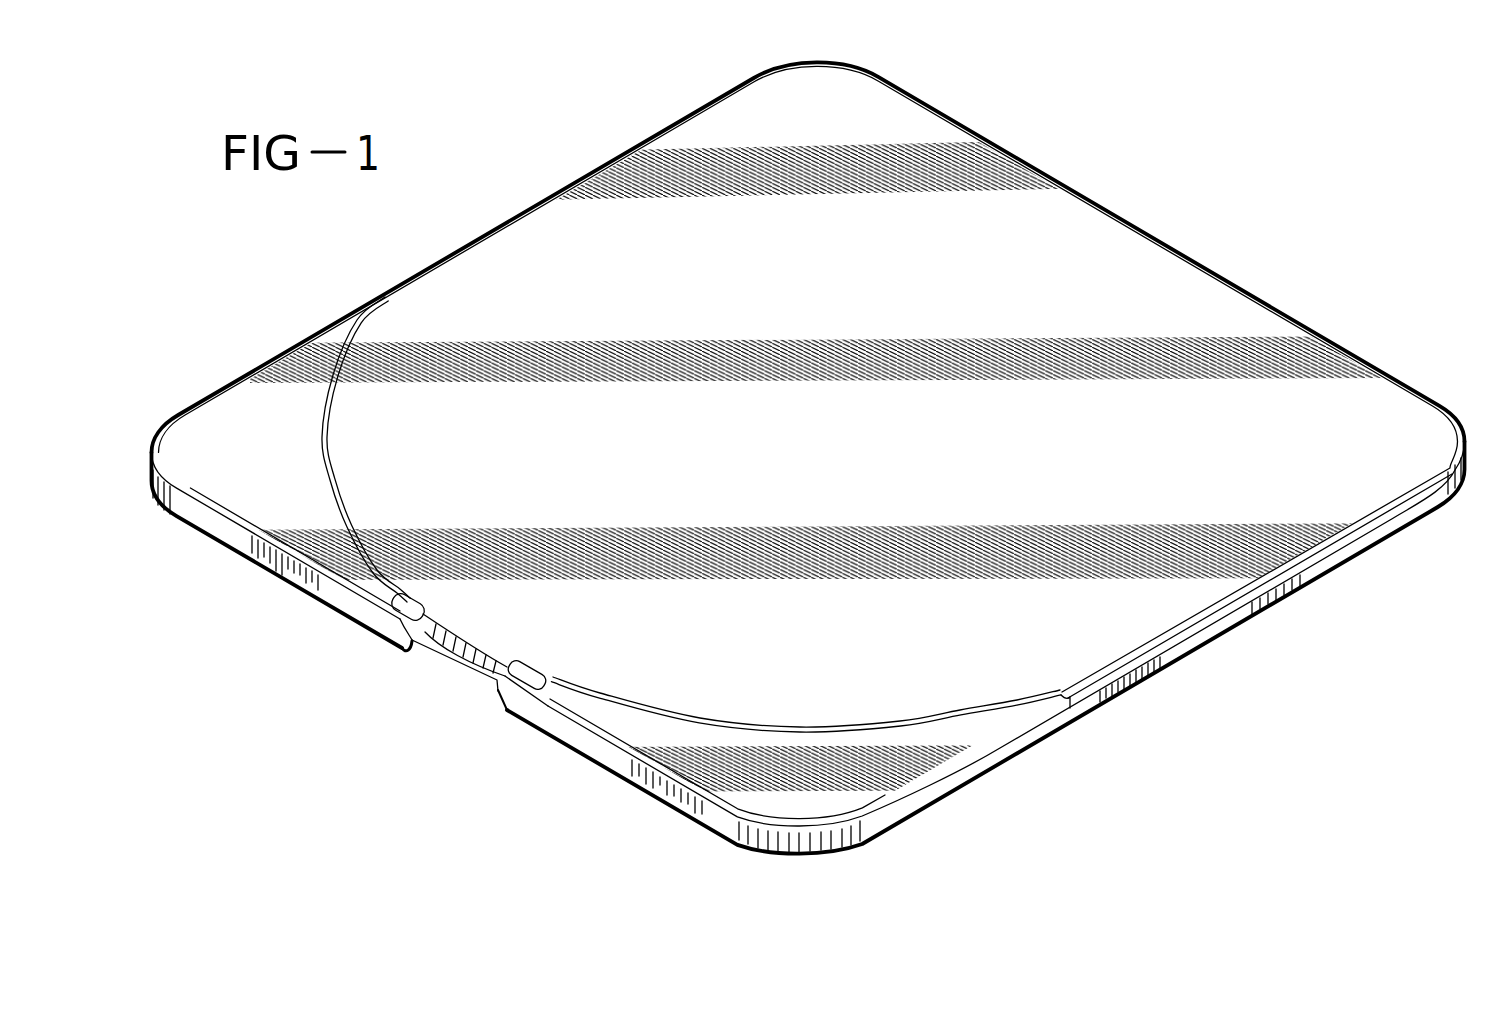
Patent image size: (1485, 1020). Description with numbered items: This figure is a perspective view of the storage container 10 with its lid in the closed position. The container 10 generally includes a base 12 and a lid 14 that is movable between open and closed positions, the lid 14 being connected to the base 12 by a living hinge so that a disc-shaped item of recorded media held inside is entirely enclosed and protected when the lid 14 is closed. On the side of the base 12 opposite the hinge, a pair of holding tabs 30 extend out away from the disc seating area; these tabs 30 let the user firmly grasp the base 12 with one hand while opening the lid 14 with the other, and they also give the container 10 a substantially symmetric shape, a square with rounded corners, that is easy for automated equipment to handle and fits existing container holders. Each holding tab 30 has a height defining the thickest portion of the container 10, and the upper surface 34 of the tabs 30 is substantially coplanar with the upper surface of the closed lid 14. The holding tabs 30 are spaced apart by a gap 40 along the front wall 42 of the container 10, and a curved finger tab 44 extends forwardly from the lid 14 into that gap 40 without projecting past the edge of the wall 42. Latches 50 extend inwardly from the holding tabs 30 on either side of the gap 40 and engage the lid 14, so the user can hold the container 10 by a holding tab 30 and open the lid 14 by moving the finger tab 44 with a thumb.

The storage container 10 is at (1158, 155).
The base 12 is at (269, 346).
The lid 14 is at (573, 172).
The holding tabs 30 is at (226, 419).
The upper surface 34 is at (252, 395).
The gap 40 is at (466, 679).
The front wall 42 is at (337, 618).
The finger tab 44 is at (471, 651).
The latches 50 is at (412, 598).